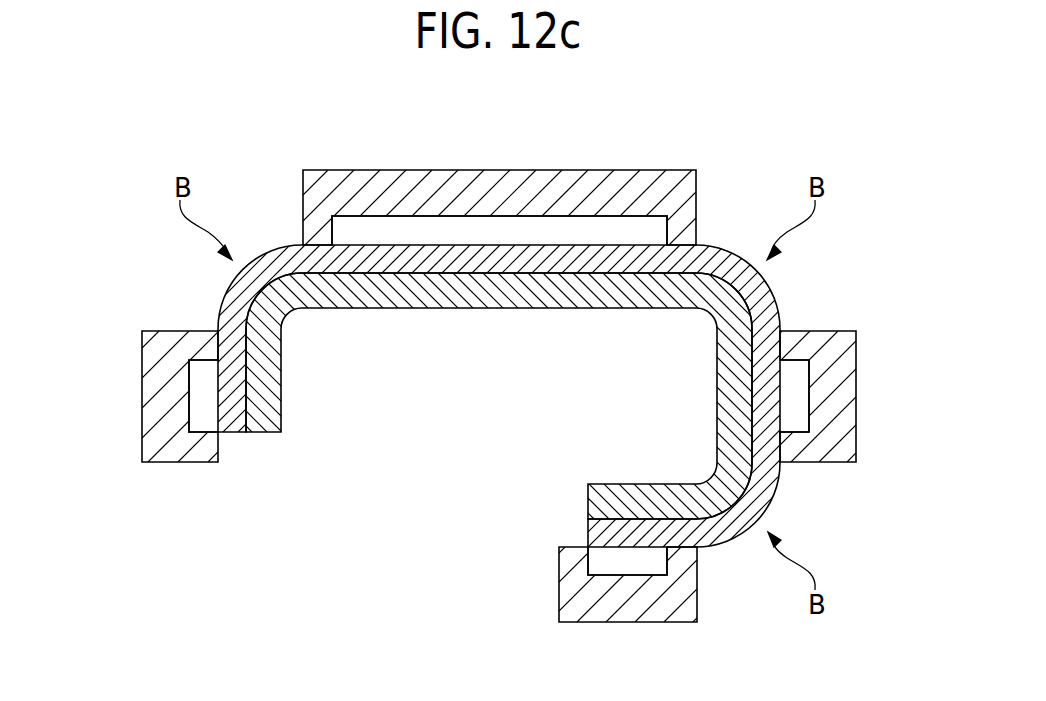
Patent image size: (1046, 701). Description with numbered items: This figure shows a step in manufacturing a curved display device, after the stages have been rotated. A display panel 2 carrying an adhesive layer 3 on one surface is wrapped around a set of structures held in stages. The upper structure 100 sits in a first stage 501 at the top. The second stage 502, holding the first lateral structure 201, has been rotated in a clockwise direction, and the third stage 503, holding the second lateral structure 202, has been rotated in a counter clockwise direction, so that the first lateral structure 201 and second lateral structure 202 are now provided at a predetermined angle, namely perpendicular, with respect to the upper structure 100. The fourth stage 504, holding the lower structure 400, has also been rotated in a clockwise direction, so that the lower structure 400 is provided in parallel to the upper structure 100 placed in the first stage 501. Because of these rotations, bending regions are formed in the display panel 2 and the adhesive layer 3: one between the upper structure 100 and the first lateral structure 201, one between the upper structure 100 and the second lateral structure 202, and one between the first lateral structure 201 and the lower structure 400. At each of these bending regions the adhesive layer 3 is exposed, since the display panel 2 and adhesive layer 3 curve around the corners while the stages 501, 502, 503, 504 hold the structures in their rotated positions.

The display panel 2 is at (263, 428).
The adhesive layer 3 is at (233, 428).
The upper structure 100 is at (485, 232).
The first lateral structure 201 is at (800, 375).
The second lateral structure 202 is at (196, 375).
The lower structure 400 is at (616, 565).
The first stage 501 is at (532, 185).
The second stage 502 is at (845, 422).
The third stage 503 is at (156, 425).
The fourth stage 504 is at (663, 607).